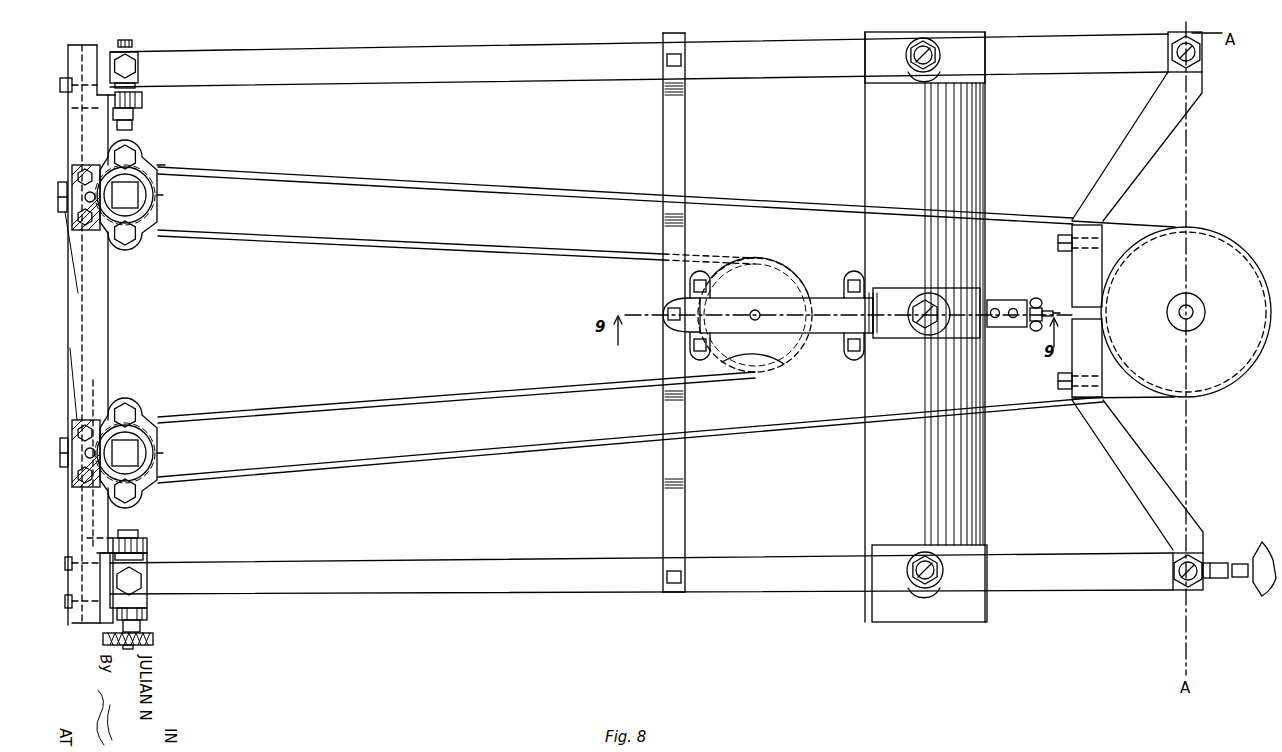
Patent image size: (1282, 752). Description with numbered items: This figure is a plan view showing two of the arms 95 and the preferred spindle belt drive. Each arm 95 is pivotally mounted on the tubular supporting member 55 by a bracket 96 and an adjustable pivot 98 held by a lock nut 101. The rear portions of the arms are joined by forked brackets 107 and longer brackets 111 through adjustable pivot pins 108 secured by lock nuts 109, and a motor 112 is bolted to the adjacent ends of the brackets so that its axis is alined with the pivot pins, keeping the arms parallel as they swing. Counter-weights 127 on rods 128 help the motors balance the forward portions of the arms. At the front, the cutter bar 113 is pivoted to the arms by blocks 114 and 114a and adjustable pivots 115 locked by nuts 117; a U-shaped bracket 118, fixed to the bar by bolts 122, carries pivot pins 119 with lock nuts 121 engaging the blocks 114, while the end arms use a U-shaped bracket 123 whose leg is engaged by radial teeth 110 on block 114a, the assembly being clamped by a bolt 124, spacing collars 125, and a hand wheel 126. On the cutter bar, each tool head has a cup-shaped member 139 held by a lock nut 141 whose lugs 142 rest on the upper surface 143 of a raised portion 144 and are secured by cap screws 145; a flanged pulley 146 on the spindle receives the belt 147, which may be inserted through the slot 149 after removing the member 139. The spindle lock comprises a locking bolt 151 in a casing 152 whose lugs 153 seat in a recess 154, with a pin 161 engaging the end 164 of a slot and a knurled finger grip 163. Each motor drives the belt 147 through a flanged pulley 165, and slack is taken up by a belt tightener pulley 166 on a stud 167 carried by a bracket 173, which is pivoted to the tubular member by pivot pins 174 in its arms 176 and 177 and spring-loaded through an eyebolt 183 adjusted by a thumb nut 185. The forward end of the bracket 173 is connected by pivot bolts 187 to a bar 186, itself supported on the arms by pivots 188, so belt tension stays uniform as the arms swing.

The tubular supporting member 55 is at (870, 117).
The arms 95 is at (575, 72).
The bracket 96 is at (900, 80).
The pivot 98 is at (932, 60).
The lock nuts 101 is at (938, 77).
The forked brackets 107 is at (1145, 470).
The pivot pins 108 is at (1198, 73).
The lock nuts 109 is at (1170, 70).
The radial teeth 110 is at (143, 553).
The brackets 111 is at (1140, 137).
The motor 112 is at (1203, 273).
The cutter bar 113 is at (103, 297).
The blocks 114 is at (140, 85).
The blocks 114a is at (143, 560).
The pivots 115 is at (140, 55).
The lock nuts 117 is at (140, 75).
The U-shaped bracket 118 is at (143, 104).
The pivot pins 119 is at (135, 44).
The lock nuts 121 is at (135, 112).
The bolts 122 is at (72, 645).
The U-shaped bracket 123 is at (147, 618).
The bolts 124 is at (137, 533).
The spacing collars 125 is at (143, 608).
The hand wheel 126 is at (148, 637).
The counter-weights 127 is at (1263, 582).
The rods 128 is at (1222, 562).
The cup-shaped member 139 is at (160, 227).
The lock nut 141 is at (125, 195).
The lugs 142 is at (138, 247).
The upper surface 143 is at (143, 167).
The raised portion 144 is at (157, 165).
The cap screws 145 is at (147, 173).
The flanged pulley 146 is at (160, 210).
The belt 147 is at (462, 183).
The slot 149 is at (170, 217).
The locking bolt 151 is at (83, 243).
The casing 152 is at (85, 168).
The lugs 153 is at (107, 237).
The recess 154 is at (87, 420).
The pin 161 is at (107, 492).
The knurled finger grip 163 is at (79, 324).
The end of slot 164 is at (83, 266).
The flanged pulley 165 is at (1147, 377).
The belt tightener pulley 166 is at (775, 265).
The stud 167 is at (760, 318).
The bracket 173 is at (725, 310).
The pivot pins 174 is at (920, 297).
The arm 176 is at (897, 300).
The arm 177 is at (1002, 298).
The eyebolt 183 is at (1044, 322).
The thumb nut 185 is at (1034, 300).
The bar 186 is at (668, 143).
The pivot bolts 187 is at (668, 312).
The pivots 188 is at (685, 60).